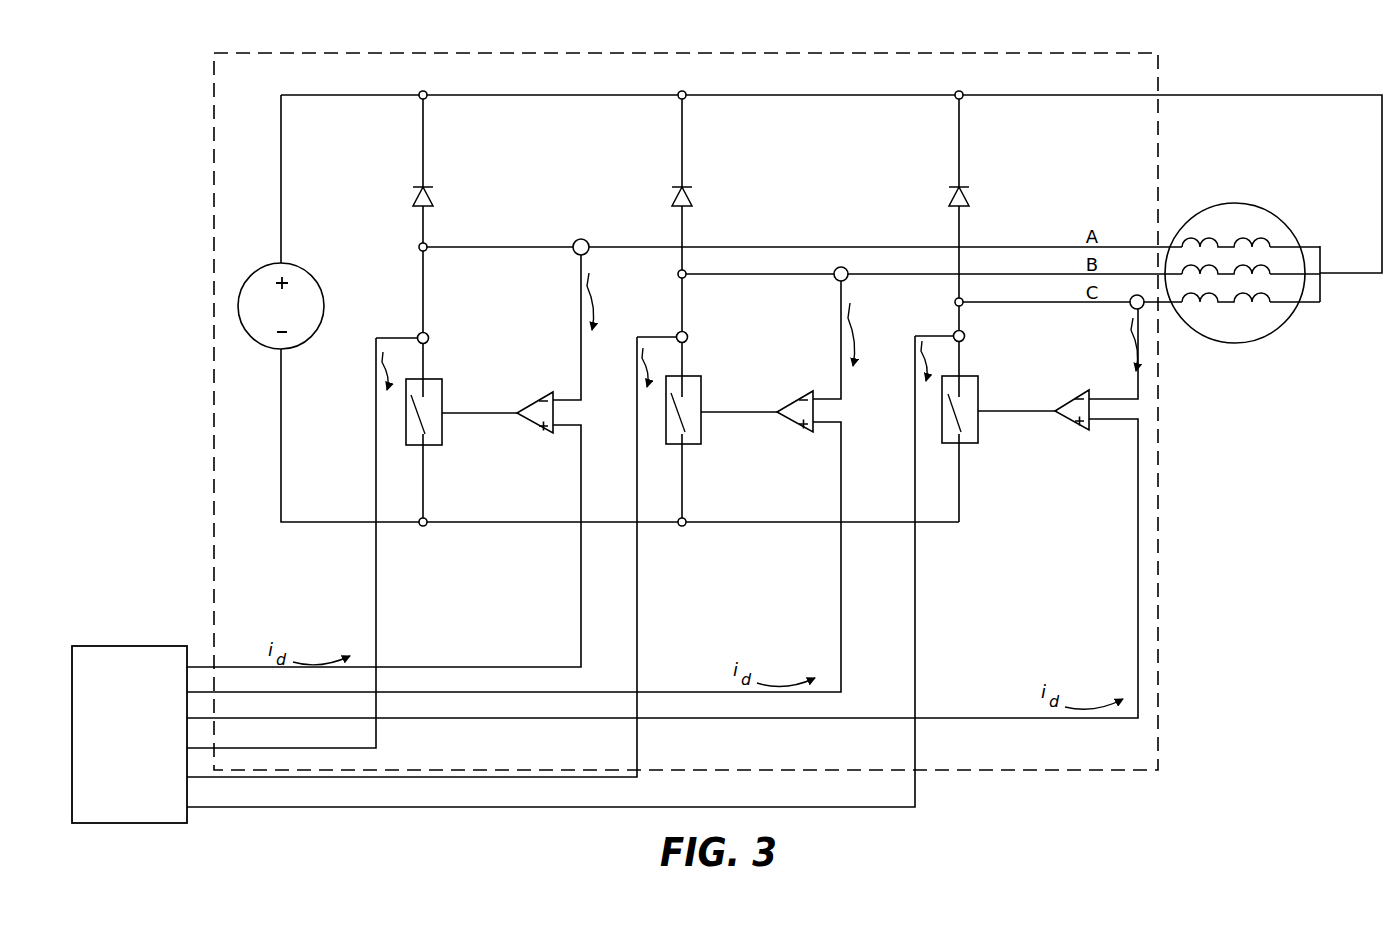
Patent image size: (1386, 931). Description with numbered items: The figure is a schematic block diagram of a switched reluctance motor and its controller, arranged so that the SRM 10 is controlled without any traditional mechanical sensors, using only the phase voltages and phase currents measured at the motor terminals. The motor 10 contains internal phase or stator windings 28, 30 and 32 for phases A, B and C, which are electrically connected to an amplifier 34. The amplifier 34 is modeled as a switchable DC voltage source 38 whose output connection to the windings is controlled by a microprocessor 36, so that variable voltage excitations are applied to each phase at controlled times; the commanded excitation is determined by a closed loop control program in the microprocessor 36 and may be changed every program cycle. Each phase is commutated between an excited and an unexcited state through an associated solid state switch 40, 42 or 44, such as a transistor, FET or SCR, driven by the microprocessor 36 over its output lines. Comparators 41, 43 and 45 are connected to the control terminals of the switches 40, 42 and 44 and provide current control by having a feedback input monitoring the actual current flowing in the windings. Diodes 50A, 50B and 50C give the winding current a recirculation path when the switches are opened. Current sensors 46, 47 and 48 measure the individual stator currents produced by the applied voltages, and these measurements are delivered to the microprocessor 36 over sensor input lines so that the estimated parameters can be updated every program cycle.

The switched reluctance motor 10 is at (1241, 343).
The stator winding 28 is at (1197, 244).
The stator winding 30 is at (1268, 272).
The stator winding 32 is at (1258, 302).
The amplifier 34 is at (1157, 76).
The microprocessor 36 is at (173, 826).
The switchable DC voltage source 38 is at (321, 293).
The solid state switch 40 is at (407, 397).
The comparator 41 is at (531, 421).
The solid state switch 42 is at (667, 398).
The comparator 43 is at (793, 421).
The solid state switch 44 is at (943, 394).
The comparator 45 is at (1071, 421).
The current sensor 46 is at (429, 339).
The current sensor 47 is at (688, 338).
The current sensor 48 is at (965, 337).
The diode 50A is at (433, 200).
The diode 50B is at (692, 200).
The diode 50C is at (969, 200).